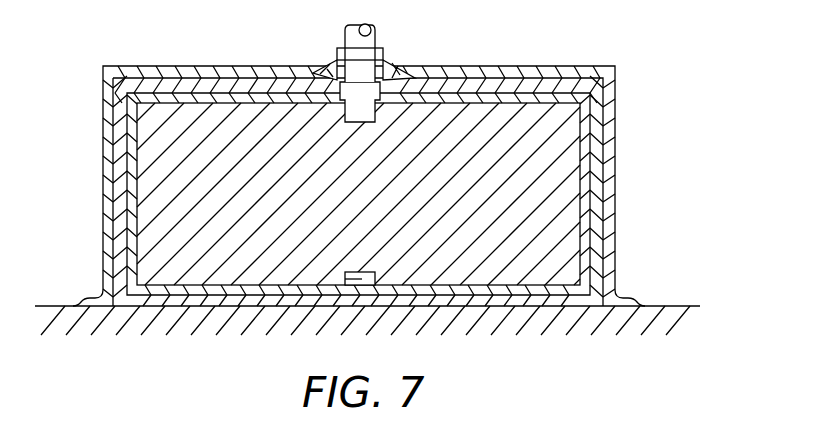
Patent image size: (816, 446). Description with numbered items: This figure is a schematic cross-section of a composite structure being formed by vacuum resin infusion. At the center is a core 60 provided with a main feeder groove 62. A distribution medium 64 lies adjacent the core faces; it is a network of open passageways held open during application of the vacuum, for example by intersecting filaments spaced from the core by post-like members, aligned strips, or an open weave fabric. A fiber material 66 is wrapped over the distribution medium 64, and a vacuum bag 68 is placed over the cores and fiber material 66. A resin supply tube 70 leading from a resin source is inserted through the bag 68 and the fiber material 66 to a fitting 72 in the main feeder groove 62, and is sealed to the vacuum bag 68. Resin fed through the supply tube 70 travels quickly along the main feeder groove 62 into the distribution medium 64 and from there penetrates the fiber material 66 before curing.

The core 60 is at (520, 262).
The main feeder groove 62 is at (373, 276).
The distribution medium 64 is at (585, 220).
The fiber material 66 is at (600, 172).
The vacuum bag 68 is at (610, 130).
The resin supply tube 70 is at (368, 45).
The fitting 72 is at (330, 68).